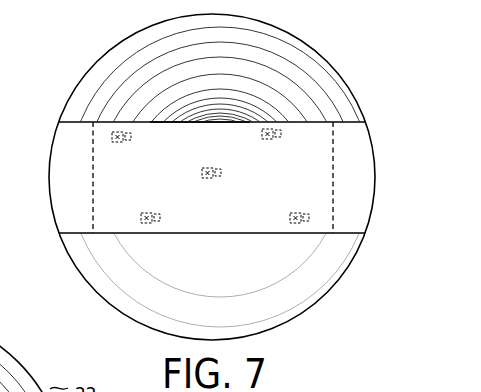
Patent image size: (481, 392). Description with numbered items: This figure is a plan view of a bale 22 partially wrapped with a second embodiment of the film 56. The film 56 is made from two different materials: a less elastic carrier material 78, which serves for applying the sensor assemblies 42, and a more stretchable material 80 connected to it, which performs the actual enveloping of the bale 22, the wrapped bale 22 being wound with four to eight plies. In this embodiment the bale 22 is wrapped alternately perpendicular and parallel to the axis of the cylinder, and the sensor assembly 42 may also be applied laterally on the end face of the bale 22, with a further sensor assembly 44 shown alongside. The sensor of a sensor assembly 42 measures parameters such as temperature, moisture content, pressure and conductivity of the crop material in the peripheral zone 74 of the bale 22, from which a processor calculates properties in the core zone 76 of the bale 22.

The bale 22 is at (343, 79).
The sensor assembly 42 is at (152, 213).
The sensor 44 is at (141, 213).
The film 56 is at (219, 155).
The peripheral zone 74 is at (315, 262).
The core zone 76 is at (78, 121).
The less elastic material 78 is at (177, 128).
The more stretchable material 80 is at (49, 171).